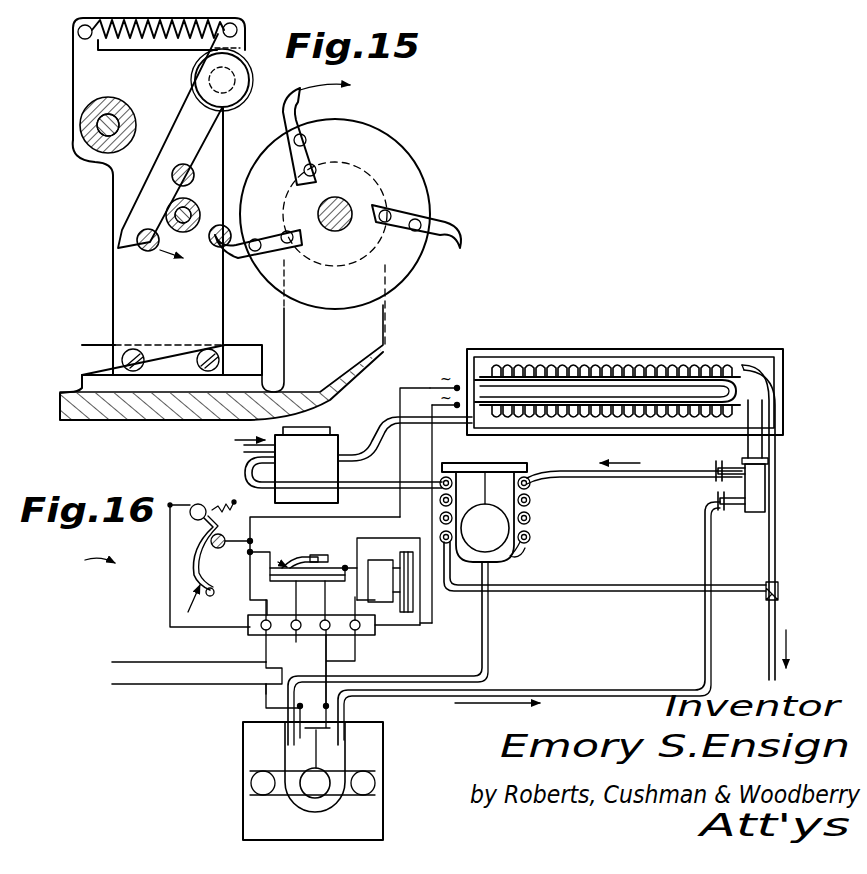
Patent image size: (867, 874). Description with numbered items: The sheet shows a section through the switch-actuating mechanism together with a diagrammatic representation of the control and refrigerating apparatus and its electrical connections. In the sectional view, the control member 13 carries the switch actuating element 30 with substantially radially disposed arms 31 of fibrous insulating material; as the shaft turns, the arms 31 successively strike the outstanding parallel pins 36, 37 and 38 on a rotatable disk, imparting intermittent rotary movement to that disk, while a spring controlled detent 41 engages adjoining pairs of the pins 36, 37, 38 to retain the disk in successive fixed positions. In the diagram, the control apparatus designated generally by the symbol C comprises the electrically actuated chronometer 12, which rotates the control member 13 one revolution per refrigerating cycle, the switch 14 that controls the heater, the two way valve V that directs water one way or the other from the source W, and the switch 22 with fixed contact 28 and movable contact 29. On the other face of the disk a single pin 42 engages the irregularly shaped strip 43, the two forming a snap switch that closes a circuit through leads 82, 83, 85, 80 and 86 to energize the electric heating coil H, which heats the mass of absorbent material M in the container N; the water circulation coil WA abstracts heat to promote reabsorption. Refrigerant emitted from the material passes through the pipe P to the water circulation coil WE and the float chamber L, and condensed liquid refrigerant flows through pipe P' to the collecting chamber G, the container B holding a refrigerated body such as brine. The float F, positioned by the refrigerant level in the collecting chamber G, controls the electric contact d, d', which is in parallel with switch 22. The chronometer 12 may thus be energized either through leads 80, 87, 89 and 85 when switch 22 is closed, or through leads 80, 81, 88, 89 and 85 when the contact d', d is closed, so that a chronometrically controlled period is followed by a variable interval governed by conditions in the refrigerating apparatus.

In FIG. 15, the spring controlled detent 41 is at (225, 40).
In FIG. 15, the pin 37 is at (195, 170).
In FIG. 15, the pin 38 is at (148, 255).
In FIG. 15, the pin 36 is at (232, 225).
In FIG. 15, the switch actuating element 30 is at (410, 166).
In FIG. 15, the control member 13 is at (340, 235).
In FIG. 15, the arms 31 is at (300, 115).
In FIG. 16, the container N is at (775, 350).
In FIG. 16, the electric heating coil H is at (660, 385).
In FIG. 16, the water circulation coil WA is at (585, 425).
In FIG. 16, the absorbent material M is at (760, 395).
In FIG. 16, the two way valve V is at (335, 476).
In FIG. 16, the water source W is at (241, 444).
In FIG. 16, the float chamber L is at (512, 510).
In FIG. 16, the condenser water circulation coil WE is at (530, 528).
In FIG. 16, the pipe P is at (634, 486).
In FIG. 16, the pipe P' is at (412, 653).
In FIG. 16, the container for refrigerated body B is at (383, 775).
In FIG. 16, the float F is at (325, 770).
In FIG. 16, the electric contact d is at (359, 728).
In FIG. 16, the electric contact d' is at (338, 681).
In FIG. 16, the collecting chamber G is at (285, 745).
In FIG. 16, the lead 88 is at (318, 650).
In FIG. 16, the lead 80 is at (135, 683).
In FIG. 16, the lead 81 is at (266, 694).
In FIG. 16, the lead 85 is at (392, 628).
In FIG. 16, the lead 83 is at (432, 623).
In FIG. 16, the lead 82 is at (258, 528).
In FIG. 16, the lead 87 is at (296, 585).
In FIG. 16, the fixed contact 28 is at (318, 575).
In FIG. 16, the movable contact 29 is at (316, 556).
In FIG. 16, the switch 22 is at (270, 555).
In FIG. 16, the lead 89 is at (407, 538).
In FIG. 16, the chronometer 12 is at (388, 566).
In FIG. 16, the lead 86 is at (170, 547).
In FIG. 16, the strip 43 is at (198, 565).
In FIG. 16, the pin 42 is at (220, 548).
In FIG. 16, the switch 14 is at (190, 603).
In FIG. 16, the control apparatus C is at (88, 560).